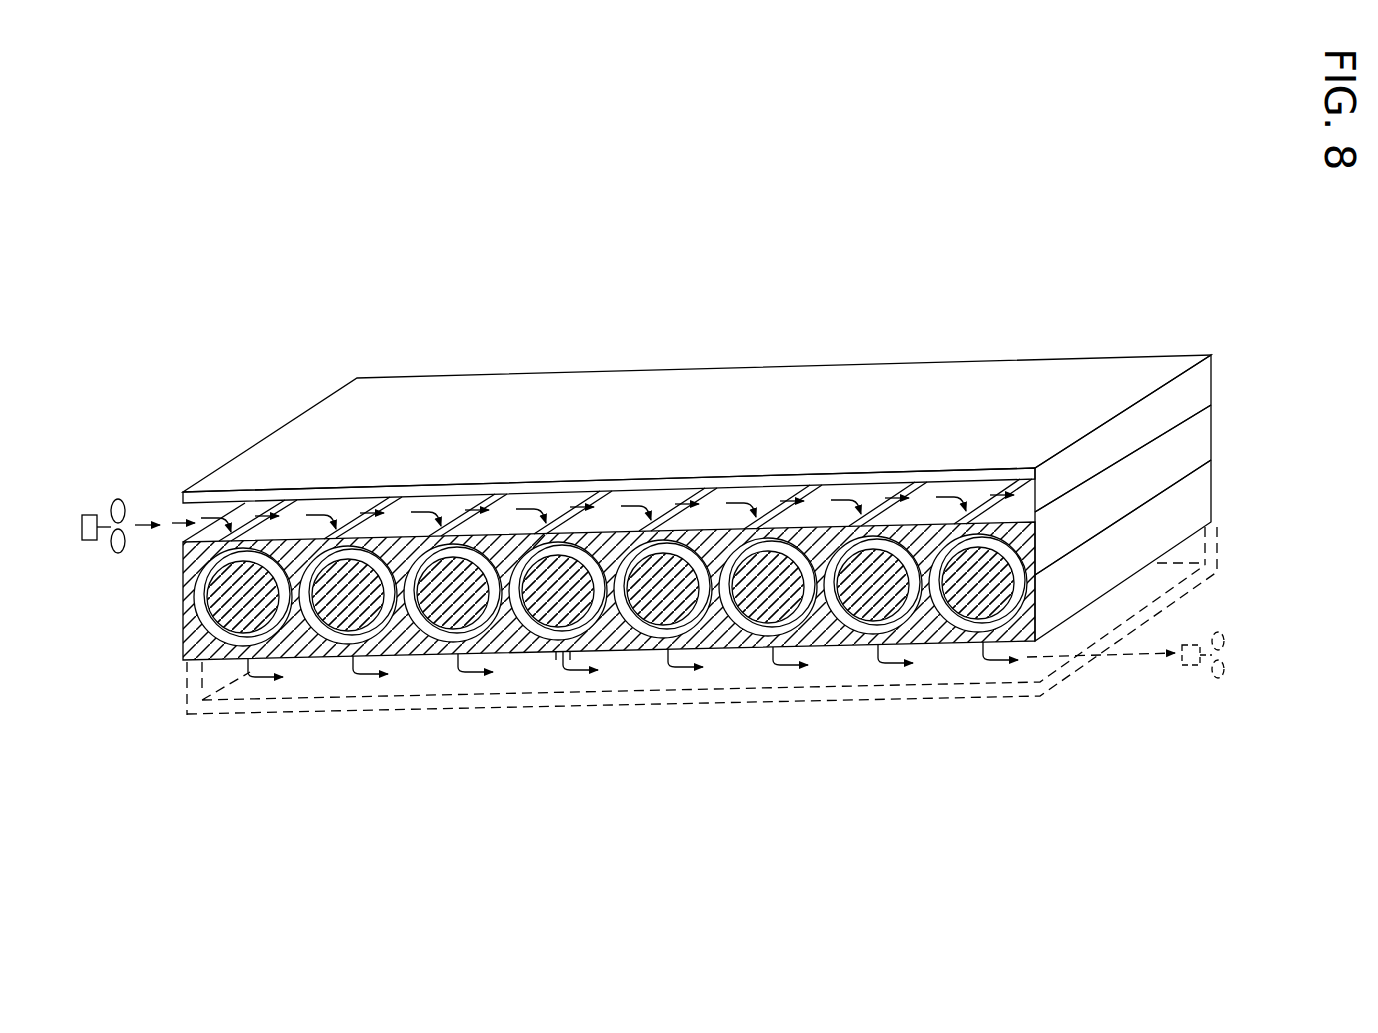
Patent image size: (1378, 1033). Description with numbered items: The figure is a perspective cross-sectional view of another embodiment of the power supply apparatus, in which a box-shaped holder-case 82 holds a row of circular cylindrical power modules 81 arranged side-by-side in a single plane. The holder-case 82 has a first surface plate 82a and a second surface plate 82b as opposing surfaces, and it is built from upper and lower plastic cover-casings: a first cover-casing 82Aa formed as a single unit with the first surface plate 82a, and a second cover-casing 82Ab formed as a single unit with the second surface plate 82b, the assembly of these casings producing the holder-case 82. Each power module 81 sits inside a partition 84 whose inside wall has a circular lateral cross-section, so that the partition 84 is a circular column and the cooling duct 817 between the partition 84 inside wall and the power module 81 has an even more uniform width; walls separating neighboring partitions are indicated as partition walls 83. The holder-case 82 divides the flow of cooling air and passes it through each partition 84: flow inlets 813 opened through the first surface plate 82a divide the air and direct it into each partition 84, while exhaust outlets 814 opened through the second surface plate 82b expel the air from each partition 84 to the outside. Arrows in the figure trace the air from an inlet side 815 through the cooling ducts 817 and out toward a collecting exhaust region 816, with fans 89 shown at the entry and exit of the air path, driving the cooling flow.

The power module 81 is at (617, 553).
The holder-case 82 is at (1316, 386).
The first surface plate 82a is at (420, 520).
The second surface plate 82b is at (425, 660).
The first cover-casing 82Aa is at (1205, 430).
The second cover-casing 82Ab is at (1203, 492).
The partition 83 is at (613, 557).
The partition 84 is at (528, 540).
The flow inlet 813 is at (562, 525).
The exhaust outlet 814 is at (570, 660).
The air inlet 815 is at (187, 517).
The exhaust duct 816 is at (1102, 606).
The cooling duct 817 is at (533, 547).
The fan 89 is at (100, 490).